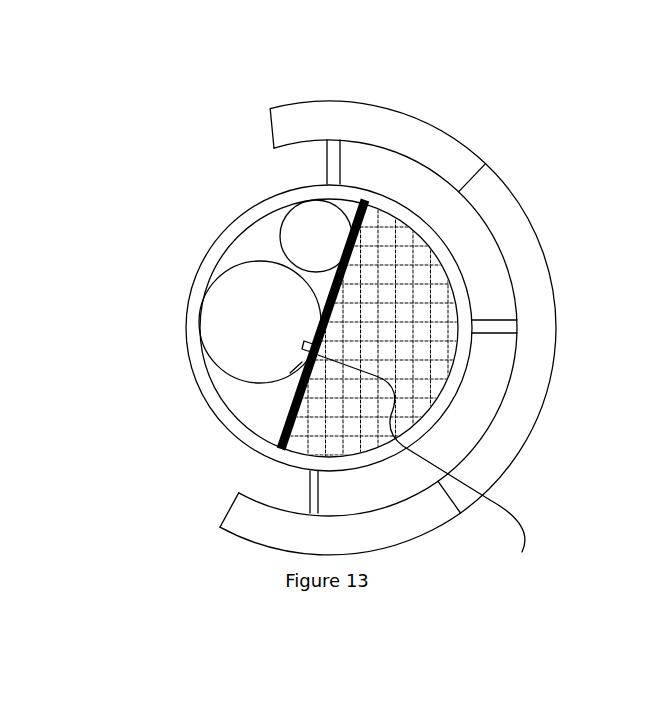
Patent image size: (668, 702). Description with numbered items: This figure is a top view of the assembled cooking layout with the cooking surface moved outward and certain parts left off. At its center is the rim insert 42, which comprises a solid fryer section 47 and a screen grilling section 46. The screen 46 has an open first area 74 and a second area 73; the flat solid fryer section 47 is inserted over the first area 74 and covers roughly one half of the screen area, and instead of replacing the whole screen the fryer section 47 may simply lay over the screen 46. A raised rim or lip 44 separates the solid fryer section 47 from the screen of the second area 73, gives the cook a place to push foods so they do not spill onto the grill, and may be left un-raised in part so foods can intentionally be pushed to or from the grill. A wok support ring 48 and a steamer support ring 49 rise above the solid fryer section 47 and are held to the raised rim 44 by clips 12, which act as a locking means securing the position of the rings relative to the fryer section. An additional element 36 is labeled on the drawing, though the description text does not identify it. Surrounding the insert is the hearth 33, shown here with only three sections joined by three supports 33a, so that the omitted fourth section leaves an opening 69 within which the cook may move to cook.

The clip 12 is at (410, 462).
The hearth 33 is at (460, 160).
The support 33a is at (340, 157).
The inner liner 36 is at (433, 422).
The rim insert 42 is at (470, 367).
The raised rim 44 is at (383, 207).
The screen grilling section 46 is at (433, 292).
The solid fryer section 47 is at (233, 402).
The wok support ring 48 is at (213, 281).
The steamer support ring 49 is at (315, 212).
The opening 69 is at (215, 468).
The second area 73 is at (438, 246).
The first area 74 is at (253, 249).